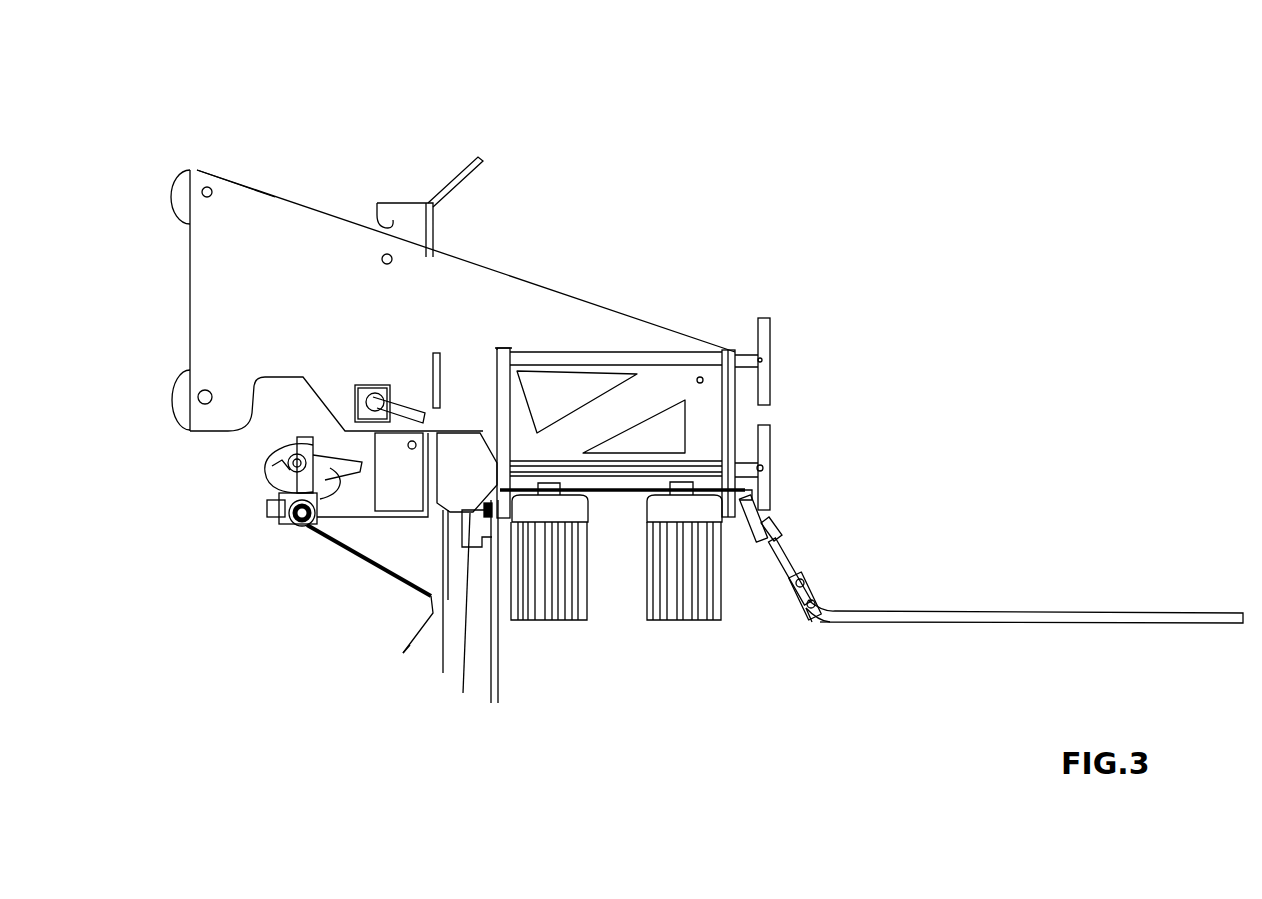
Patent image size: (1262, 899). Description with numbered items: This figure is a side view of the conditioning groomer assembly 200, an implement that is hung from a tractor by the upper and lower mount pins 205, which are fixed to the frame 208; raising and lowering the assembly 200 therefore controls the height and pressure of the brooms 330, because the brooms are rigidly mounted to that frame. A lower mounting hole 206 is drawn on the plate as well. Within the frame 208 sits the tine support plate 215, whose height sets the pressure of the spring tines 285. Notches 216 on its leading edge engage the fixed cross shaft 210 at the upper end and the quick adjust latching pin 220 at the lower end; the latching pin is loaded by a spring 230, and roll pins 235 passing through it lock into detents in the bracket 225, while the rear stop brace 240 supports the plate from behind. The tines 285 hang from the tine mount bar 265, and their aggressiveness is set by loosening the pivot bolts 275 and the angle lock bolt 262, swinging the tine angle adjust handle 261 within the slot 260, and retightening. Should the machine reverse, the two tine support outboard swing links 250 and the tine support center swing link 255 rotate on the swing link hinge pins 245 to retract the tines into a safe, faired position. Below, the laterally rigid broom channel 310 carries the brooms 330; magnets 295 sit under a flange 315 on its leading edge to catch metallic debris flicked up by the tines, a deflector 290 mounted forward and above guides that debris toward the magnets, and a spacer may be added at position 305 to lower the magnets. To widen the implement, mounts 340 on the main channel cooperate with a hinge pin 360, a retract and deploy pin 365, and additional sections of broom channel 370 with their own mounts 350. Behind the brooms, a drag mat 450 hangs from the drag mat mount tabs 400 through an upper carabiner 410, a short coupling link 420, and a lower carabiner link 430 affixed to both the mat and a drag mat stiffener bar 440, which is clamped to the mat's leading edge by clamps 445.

The conditioning groomer assembly 200 is at (492, 80).
The upper and lower mount pins 205 is at (185, 192).
The lower mounting hole 206 is at (200, 392).
The frame 208 is at (268, 222).
The fixed cross shaft 210 is at (386, 258).
The tine support plate 215 is at (412, 217).
The notches 216 is at (383, 232).
The quick adjust latching pin 220 is at (440, 370).
The bracket 225 is at (410, 400).
The spring 230 is at (383, 380).
The roll pins 235 is at (372, 383).
The rear stop brace 240 is at (372, 458).
The swing link hinge pins 245 is at (430, 432).
The tine support outboard swing links 250 is at (355, 497).
The tine support center swing link 255 is at (280, 527).
The slot 260 is at (290, 478).
The tine angle adjust handle 261 is at (287, 441).
The angle lock bolt 262 is at (295, 425).
The tine mount bar 265 is at (283, 522).
The pivot bolts 275 is at (302, 525).
The spring tines 285 is at (403, 653).
The deflector 290 is at (403, 653).
The magnets 295 is at (443, 673).
The spacer position 305 is at (490, 703).
The broom channel 310 is at (612, 495).
The flange 315 is at (498, 703).
The brooms 330 is at (698, 612).
The mounts 340 is at (730, 352).
The mounts 350 is at (727, 350).
The hinge pin 360 is at (750, 468).
The retract and deploy pin 365 is at (750, 358).
The additional sections of broom channel 370 is at (750, 497).
The drag mat mount tabs 400 is at (743, 497).
The upper carabiner 410 is at (772, 518).
The short coupling link 420 is at (802, 556).
The lower carabiner link 430 is at (817, 592).
The drag mat stiffener bar 440 is at (817, 624).
The clamps 445 is at (833, 627).
The drag mat 450 is at (963, 614).